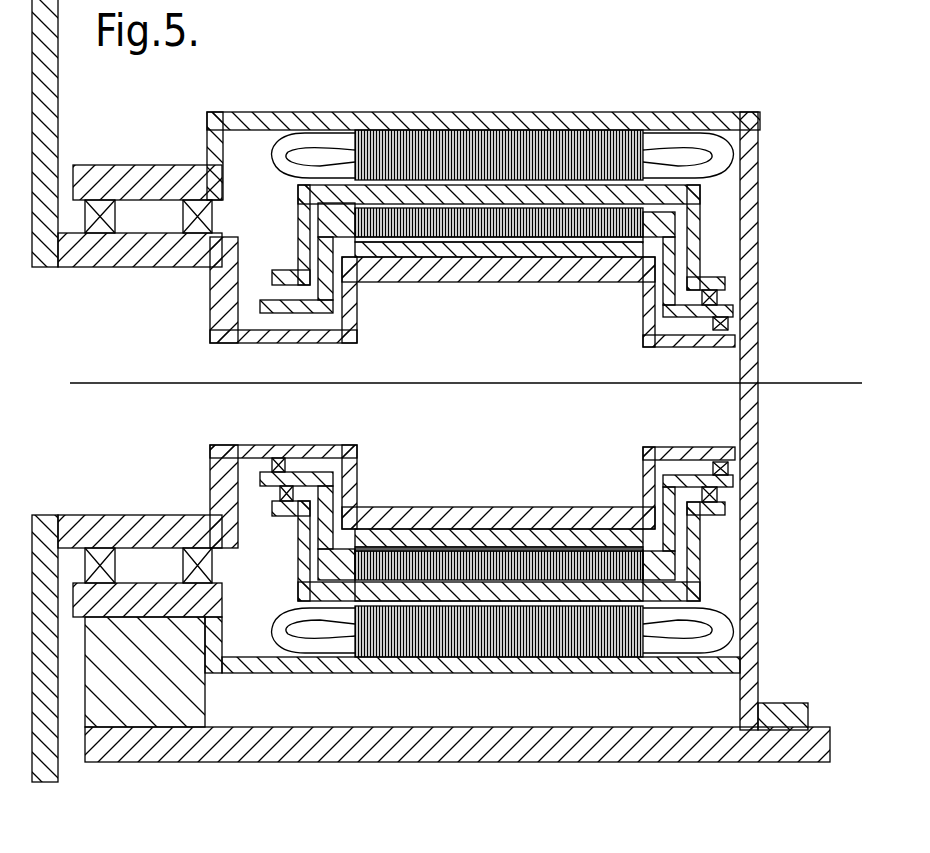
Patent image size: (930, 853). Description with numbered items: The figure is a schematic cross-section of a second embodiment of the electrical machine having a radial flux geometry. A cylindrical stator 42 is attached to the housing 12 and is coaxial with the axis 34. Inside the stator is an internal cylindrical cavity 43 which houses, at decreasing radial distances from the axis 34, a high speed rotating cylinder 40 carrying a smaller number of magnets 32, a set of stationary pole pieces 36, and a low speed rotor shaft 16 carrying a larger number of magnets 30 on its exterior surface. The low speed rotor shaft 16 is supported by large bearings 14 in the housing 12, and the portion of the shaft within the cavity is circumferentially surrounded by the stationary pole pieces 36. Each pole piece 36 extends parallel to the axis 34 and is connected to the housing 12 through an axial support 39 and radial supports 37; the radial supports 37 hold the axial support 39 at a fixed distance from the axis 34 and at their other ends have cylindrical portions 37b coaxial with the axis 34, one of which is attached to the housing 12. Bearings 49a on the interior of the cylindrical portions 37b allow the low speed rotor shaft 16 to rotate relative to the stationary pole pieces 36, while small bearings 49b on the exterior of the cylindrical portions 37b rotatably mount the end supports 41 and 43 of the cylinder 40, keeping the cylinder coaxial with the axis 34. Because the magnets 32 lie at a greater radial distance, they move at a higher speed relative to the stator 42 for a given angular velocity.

The housing 12 is at (246, 112).
The large bearings 14 is at (178, 222).
The low speed rotor shaft 16 is at (380, 283).
The P1 magnets 30 is at (616, 252).
The P2 magnets 32 is at (513, 197).
The axis 34 is at (95, 385).
The stationary pole pieces 36 is at (547, 238).
The radial supports 37 is at (675, 257).
The cylindrical portions 37b is at (733, 313).
The axial support 39 is at (353, 216).
The high speed rotating cylinder 40 is at (470, 600).
The support 41 is at (298, 213).
The cylindrical stator 42 is at (585, 140).
The internal cylindrical cavity 43 is at (432, 138).
The bearings 49a is at (714, 324).
The small bearings 49b is at (718, 297).